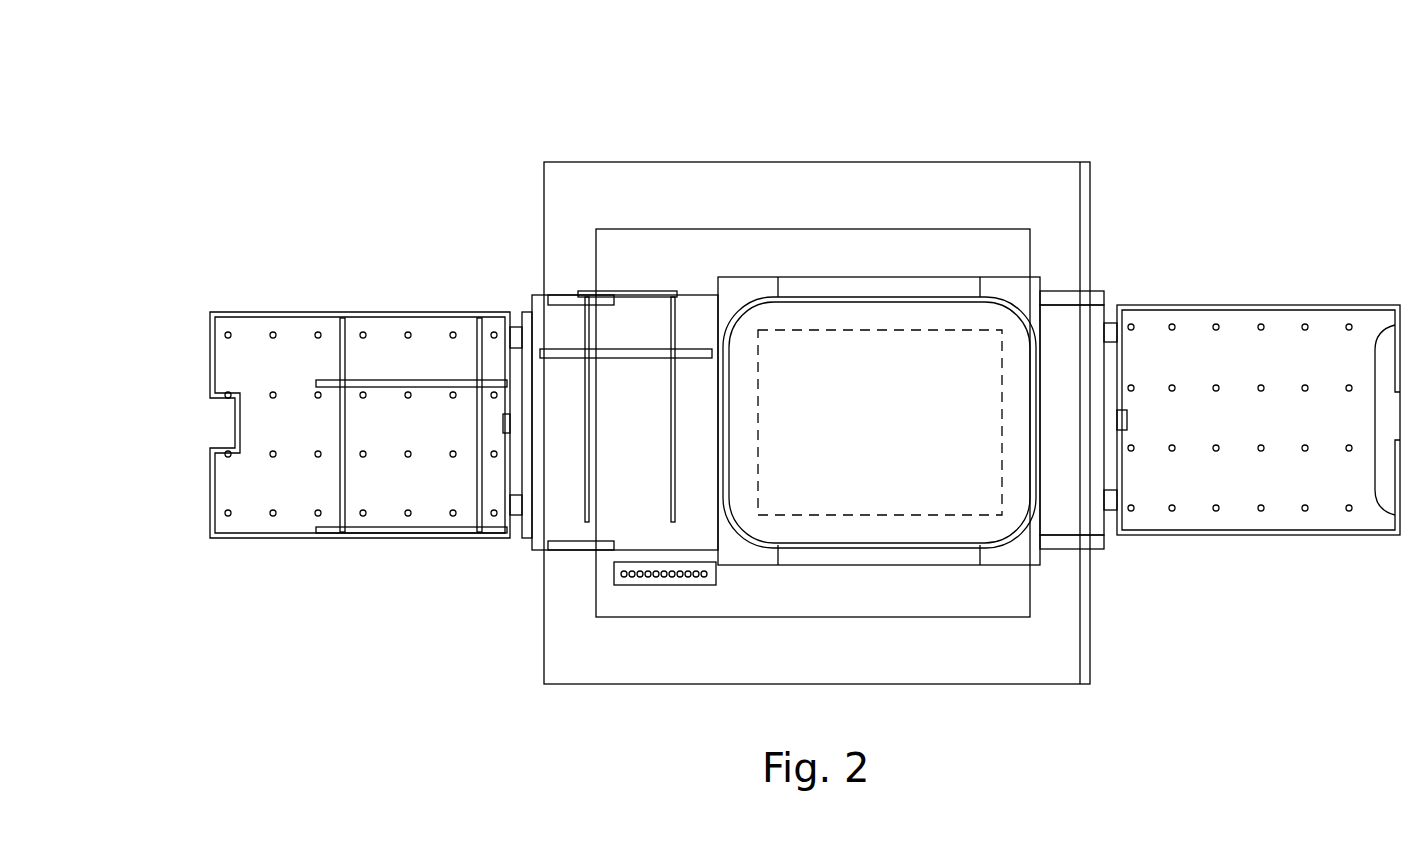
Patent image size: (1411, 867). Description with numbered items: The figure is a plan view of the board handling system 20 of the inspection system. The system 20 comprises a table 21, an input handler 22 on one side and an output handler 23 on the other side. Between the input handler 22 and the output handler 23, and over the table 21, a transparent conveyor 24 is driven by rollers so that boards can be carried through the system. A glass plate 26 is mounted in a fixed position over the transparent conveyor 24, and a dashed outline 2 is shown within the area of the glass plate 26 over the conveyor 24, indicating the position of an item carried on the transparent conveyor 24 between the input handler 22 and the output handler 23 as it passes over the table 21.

The board handling system 20 is at (405, 218).
The table 21 is at (705, 145).
The substrate 2 is at (826, 328).
The input handler 22 is at (200, 385).
The output handler 23 is at (1217, 548).
The transparent conveyor 24 is at (556, 498).
The glass plate 26 is at (955, 527).